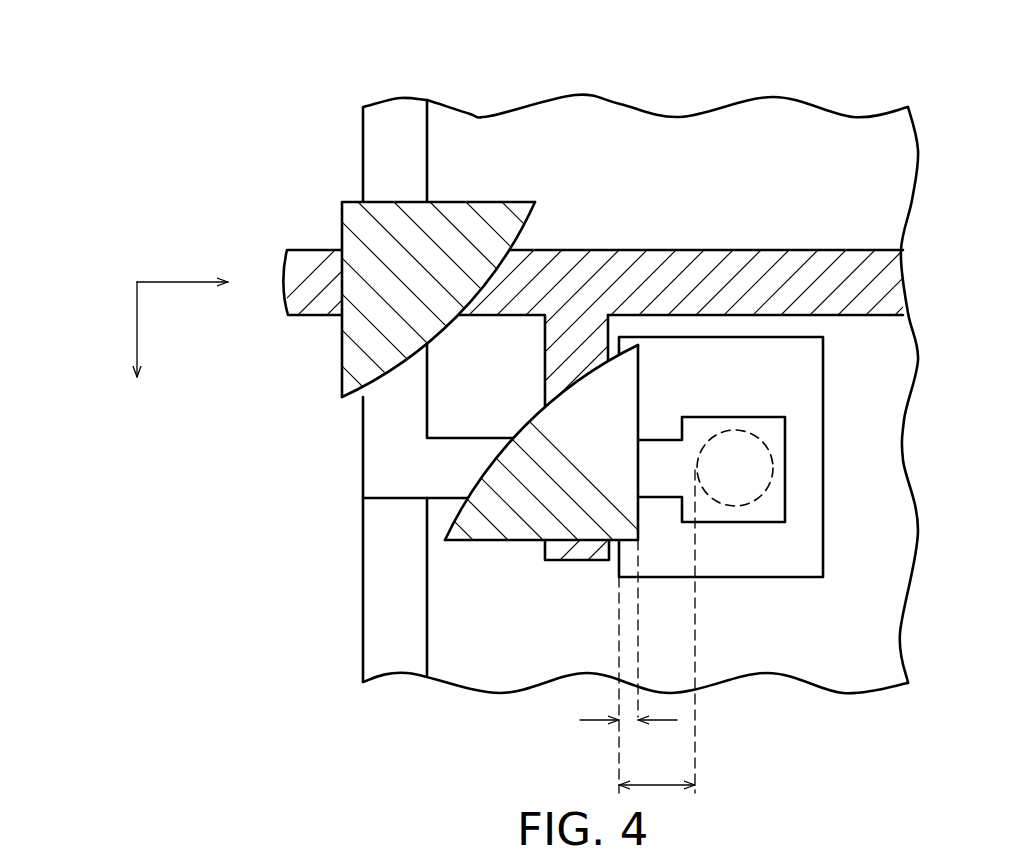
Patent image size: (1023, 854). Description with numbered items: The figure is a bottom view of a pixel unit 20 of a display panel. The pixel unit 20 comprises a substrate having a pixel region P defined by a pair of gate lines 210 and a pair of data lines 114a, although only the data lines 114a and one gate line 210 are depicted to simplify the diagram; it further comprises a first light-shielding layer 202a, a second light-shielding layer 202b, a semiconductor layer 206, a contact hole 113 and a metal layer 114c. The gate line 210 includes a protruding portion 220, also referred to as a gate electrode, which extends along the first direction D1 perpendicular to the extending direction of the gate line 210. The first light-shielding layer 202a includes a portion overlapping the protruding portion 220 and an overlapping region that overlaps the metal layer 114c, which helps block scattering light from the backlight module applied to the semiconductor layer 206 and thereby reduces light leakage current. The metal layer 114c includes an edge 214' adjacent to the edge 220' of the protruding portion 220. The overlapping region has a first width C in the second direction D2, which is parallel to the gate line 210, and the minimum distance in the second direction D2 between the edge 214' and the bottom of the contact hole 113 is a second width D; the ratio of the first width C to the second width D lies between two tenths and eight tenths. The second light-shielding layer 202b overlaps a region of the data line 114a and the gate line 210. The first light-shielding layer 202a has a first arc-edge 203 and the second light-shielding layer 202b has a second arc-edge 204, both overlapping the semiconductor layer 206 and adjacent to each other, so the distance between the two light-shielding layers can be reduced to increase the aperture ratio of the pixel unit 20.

The pixel unit 20 is at (271, 97).
The first light-shielding layer 202a is at (485, 527).
The second light-shielding layer 202b is at (478, 222).
The first arc-edge 203 is at (487, 472).
The second arc-edge 204 is at (415, 350).
The semiconductor layer 206 is at (383, 470).
The gate line 210 is at (848, 283).
The protruding portion 220 is at (420, 384).
The edge of the protruding portion 220' is at (680, 199).
The contact hole 113 is at (773, 466).
The data line 114a is at (383, 630).
The metal layer 114c is at (802, 520).
The edge of the metal layer 214' is at (574, 645).
The pixel region P is at (847, 630).
The first width C is at (628, 666).
The second width D is at (657, 631).
The first direction D1 is at (137, 332).
The second direction D2 is at (182, 282).